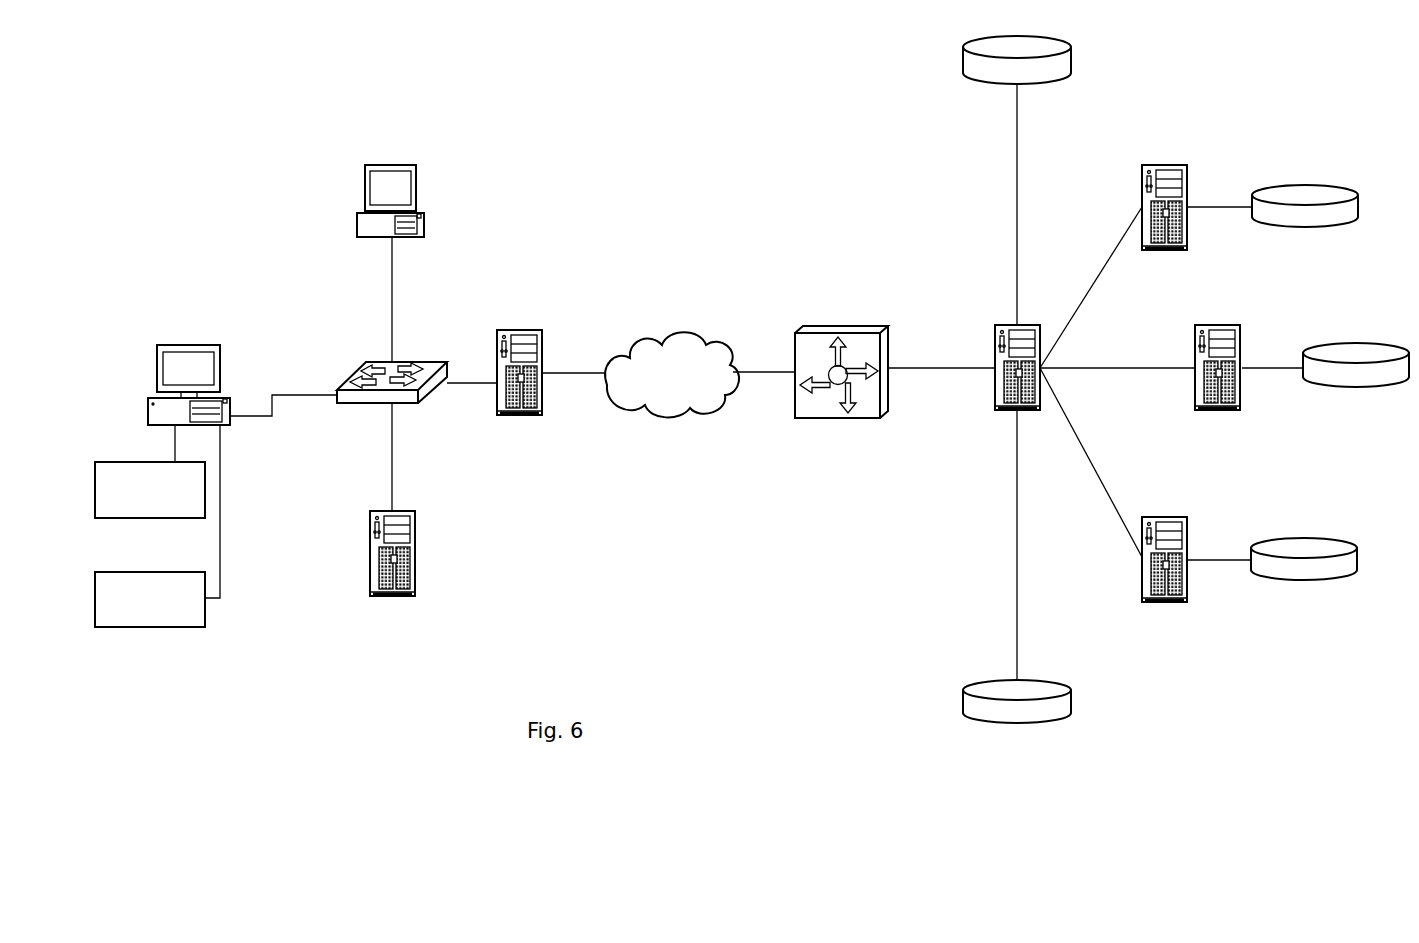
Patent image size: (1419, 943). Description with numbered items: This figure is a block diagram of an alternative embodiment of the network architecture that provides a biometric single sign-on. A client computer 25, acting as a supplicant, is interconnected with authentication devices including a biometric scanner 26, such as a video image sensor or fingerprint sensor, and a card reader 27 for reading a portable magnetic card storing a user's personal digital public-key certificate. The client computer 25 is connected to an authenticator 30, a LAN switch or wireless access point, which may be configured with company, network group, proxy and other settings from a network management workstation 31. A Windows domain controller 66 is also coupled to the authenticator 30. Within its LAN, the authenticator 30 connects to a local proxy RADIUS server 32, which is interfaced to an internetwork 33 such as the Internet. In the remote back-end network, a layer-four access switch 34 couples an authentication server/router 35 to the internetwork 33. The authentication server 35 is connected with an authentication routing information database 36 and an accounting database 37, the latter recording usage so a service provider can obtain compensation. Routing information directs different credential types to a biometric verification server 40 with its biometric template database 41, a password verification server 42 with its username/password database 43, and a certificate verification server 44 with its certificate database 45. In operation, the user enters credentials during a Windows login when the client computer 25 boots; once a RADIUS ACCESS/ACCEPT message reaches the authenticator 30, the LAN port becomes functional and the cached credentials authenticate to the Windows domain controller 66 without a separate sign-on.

The client computer 25 is at (202, 345).
The biometric scanner 26 is at (131, 518).
The card reader 27 is at (165, 627).
The authenticator 30 is at (368, 404).
The network management workstation 31 is at (357, 219).
The local proxy RADIUS server 32 is at (530, 328).
The internetwork 33 is at (645, 405).
The layer-4 access switch 34 is at (828, 327).
The authentication server/router 35 is at (992, 380).
The authentication routing information database 36 is at (985, 80).
The accounting database 37 is at (990, 680).
The biometric verification server 40 is at (1188, 580).
The biometric template database 41 is at (1322, 538).
The password verification server 42 is at (1242, 390).
The username/password database 43 is at (1367, 345).
The certificate verification server 44 is at (1188, 177).
The certificate database 45 is at (1320, 185).
The Windows domain controller 66 is at (416, 570).